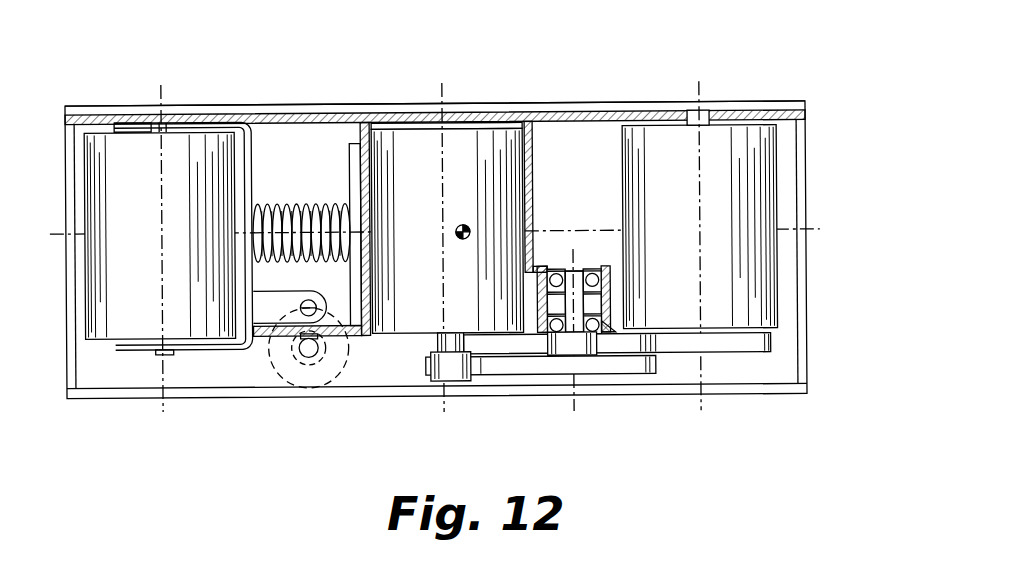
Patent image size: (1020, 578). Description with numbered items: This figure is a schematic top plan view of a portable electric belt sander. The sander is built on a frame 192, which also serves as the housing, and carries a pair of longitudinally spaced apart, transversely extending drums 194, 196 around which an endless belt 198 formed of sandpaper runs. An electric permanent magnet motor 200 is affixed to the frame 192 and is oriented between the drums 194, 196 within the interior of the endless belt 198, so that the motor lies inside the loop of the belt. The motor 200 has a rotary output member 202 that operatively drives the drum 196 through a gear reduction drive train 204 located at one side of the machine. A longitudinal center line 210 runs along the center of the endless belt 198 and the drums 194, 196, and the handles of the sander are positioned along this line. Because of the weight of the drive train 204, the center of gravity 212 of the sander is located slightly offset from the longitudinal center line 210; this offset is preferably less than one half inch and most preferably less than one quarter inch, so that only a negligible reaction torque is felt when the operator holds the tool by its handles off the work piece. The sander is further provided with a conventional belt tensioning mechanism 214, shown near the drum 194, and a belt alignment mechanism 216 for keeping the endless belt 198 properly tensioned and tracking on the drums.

The frame 192 is at (770, 387).
The drum 194 is at (178, 145).
The drum 196 is at (715, 135).
The endless belt 198 is at (580, 135).
The electric permanent magnet motor 200 is at (405, 142).
The rotary output member 202 is at (437, 337).
The gear reduction drive train 204 is at (526, 377).
The longitudinal center line 210 is at (818, 233).
The center of gravity 212 is at (463, 225).
The belt tensioning mechanism 214 is at (287, 203).
The belt alignment mechanism 216 is at (277, 363).